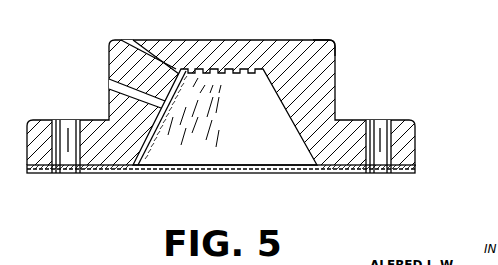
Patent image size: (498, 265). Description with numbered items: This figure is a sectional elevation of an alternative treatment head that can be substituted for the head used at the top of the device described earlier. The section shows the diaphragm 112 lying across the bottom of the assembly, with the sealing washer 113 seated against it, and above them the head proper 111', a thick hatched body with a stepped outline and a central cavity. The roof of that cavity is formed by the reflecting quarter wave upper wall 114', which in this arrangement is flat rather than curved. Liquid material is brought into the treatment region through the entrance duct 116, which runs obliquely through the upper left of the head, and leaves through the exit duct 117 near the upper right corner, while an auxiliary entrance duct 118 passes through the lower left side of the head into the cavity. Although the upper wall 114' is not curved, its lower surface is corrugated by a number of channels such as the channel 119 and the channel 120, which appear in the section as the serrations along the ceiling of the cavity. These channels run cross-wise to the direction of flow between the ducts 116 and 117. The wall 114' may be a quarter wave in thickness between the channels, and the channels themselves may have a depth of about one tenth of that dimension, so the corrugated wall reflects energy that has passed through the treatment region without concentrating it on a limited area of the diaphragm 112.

The head proper 111' is at (221, 102).
The diaphragm 112 is at (286, 172).
The sealing washer 113 is at (414, 168).
The reflecting quarter wave upper wall 114' is at (221, 85).
The entrance duct 116 is at (128, 42).
The exit duct 117 is at (312, 38).
The auxiliary entrance duct 118 is at (116, 85).
The channel 119 is at (189, 69).
The channel 120 is at (206, 70).